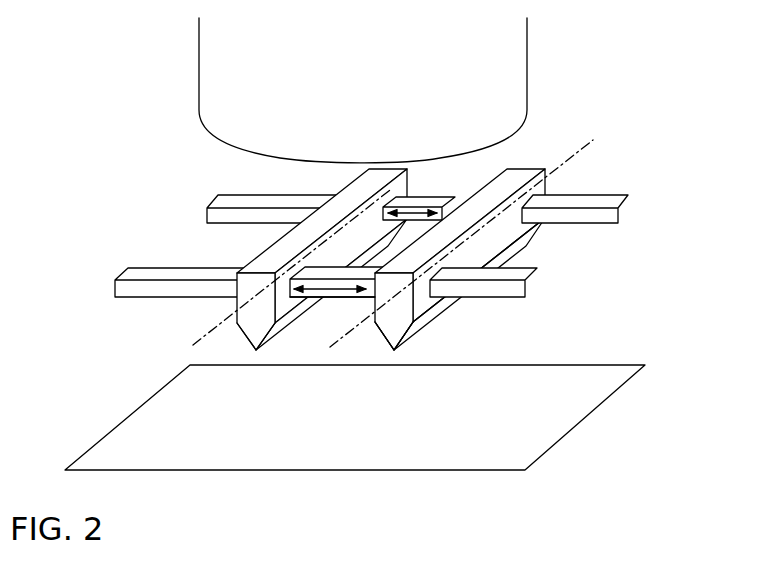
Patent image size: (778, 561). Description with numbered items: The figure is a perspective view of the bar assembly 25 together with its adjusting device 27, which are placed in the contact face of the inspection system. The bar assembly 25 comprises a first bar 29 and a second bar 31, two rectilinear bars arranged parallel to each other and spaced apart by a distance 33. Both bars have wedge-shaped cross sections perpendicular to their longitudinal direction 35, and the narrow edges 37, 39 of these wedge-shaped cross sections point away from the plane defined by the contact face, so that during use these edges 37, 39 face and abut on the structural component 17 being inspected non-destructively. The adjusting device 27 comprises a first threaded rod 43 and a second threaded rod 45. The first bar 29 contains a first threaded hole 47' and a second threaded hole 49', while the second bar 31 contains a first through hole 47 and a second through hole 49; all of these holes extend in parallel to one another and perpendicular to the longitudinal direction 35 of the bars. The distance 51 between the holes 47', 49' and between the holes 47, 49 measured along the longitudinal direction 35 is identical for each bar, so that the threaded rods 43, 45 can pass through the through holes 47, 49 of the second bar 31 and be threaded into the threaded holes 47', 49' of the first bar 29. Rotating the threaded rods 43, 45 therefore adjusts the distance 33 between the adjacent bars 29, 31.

The structural component 17 is at (522, 434).
The bar assembly 25 is at (410, 353).
The adjusting device 27 is at (353, 254).
The first bar 29 is at (355, 190).
The second bar 31 is at (518, 174).
The distance 33 is at (327, 310).
The longitudinal direction 35 is at (590, 142).
The narrow edge 37 is at (255, 350).
The narrow edge 39 is at (393, 353).
The first threaded rod 43 is at (122, 276).
The second threaded rod 45 is at (207, 198).
The first through hole 47 is at (484, 305).
The first threaded hole 47' is at (324, 202).
The second through hole 49 is at (582, 194).
The second threaded hole 49' is at (419, 164).
The distance 51 is at (563, 230).